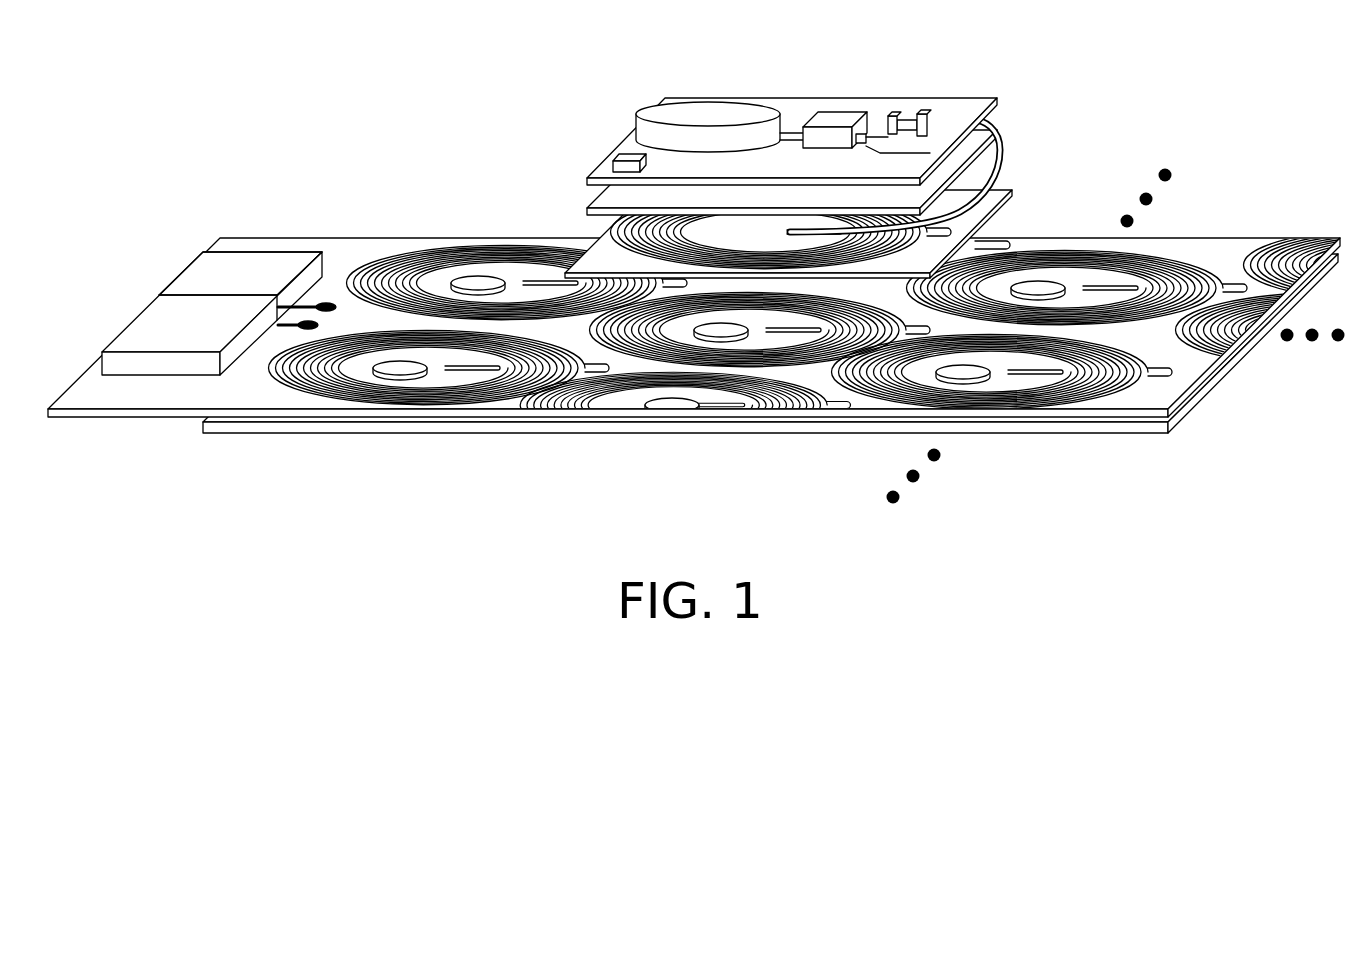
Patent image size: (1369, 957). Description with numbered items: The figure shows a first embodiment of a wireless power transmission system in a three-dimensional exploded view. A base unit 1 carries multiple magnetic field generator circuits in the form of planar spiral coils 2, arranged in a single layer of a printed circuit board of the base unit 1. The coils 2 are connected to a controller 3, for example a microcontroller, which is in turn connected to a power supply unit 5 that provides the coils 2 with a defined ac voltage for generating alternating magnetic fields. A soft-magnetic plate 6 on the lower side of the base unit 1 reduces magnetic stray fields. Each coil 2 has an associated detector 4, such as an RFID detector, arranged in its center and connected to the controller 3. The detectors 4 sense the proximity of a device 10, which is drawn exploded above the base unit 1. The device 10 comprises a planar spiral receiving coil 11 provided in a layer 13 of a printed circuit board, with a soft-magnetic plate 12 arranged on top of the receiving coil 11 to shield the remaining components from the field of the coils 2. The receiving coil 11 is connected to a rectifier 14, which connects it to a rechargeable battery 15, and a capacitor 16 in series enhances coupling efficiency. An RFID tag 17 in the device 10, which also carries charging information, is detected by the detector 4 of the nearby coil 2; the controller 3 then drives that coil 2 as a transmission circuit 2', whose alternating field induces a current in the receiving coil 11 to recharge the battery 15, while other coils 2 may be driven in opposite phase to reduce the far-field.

The base unit 1 is at (338, 237).
The planar spiral coils 2 is at (819, 334).
The transmission circuit 2' is at (686, 430).
The controller 3 is at (143, 318).
The detector 4 is at (478, 277).
The power supply unit 5 is at (195, 273).
The soft-magnetic plate 6 is at (1125, 433).
The device 10 is at (779, 144).
The planar spiral receiving coil 11 is at (593, 245).
The soft-magnetic plate 12 is at (600, 200).
The layer 13 is at (1003, 182).
The rectifier 14 is at (837, 113).
The rechargeable battery 15 is at (715, 107).
The capacitor 16 is at (908, 112).
The RFID tag 17 is at (613, 155).